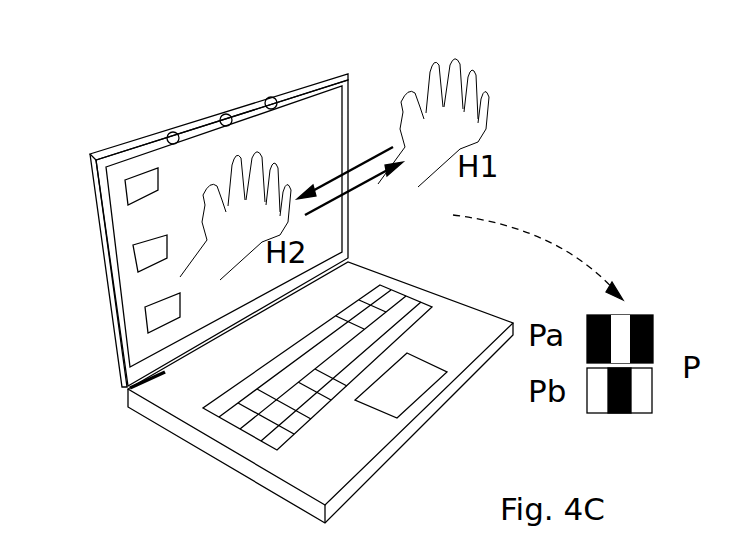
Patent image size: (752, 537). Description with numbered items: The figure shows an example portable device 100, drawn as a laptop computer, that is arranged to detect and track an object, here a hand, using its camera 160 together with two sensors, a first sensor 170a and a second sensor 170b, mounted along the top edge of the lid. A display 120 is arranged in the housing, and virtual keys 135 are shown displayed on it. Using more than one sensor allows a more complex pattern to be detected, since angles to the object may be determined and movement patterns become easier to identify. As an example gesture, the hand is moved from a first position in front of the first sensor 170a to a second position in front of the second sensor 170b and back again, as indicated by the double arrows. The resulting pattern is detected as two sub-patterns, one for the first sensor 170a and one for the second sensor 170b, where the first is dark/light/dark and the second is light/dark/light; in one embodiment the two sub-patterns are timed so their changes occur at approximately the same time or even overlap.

The portable device 100 is at (110, 124).
The display 120 is at (140, 218).
The virtual key 135 is at (137, 262).
The camera 160 is at (226, 113).
The first sensor 170a is at (271, 96).
The second sensor 170b is at (173, 131).